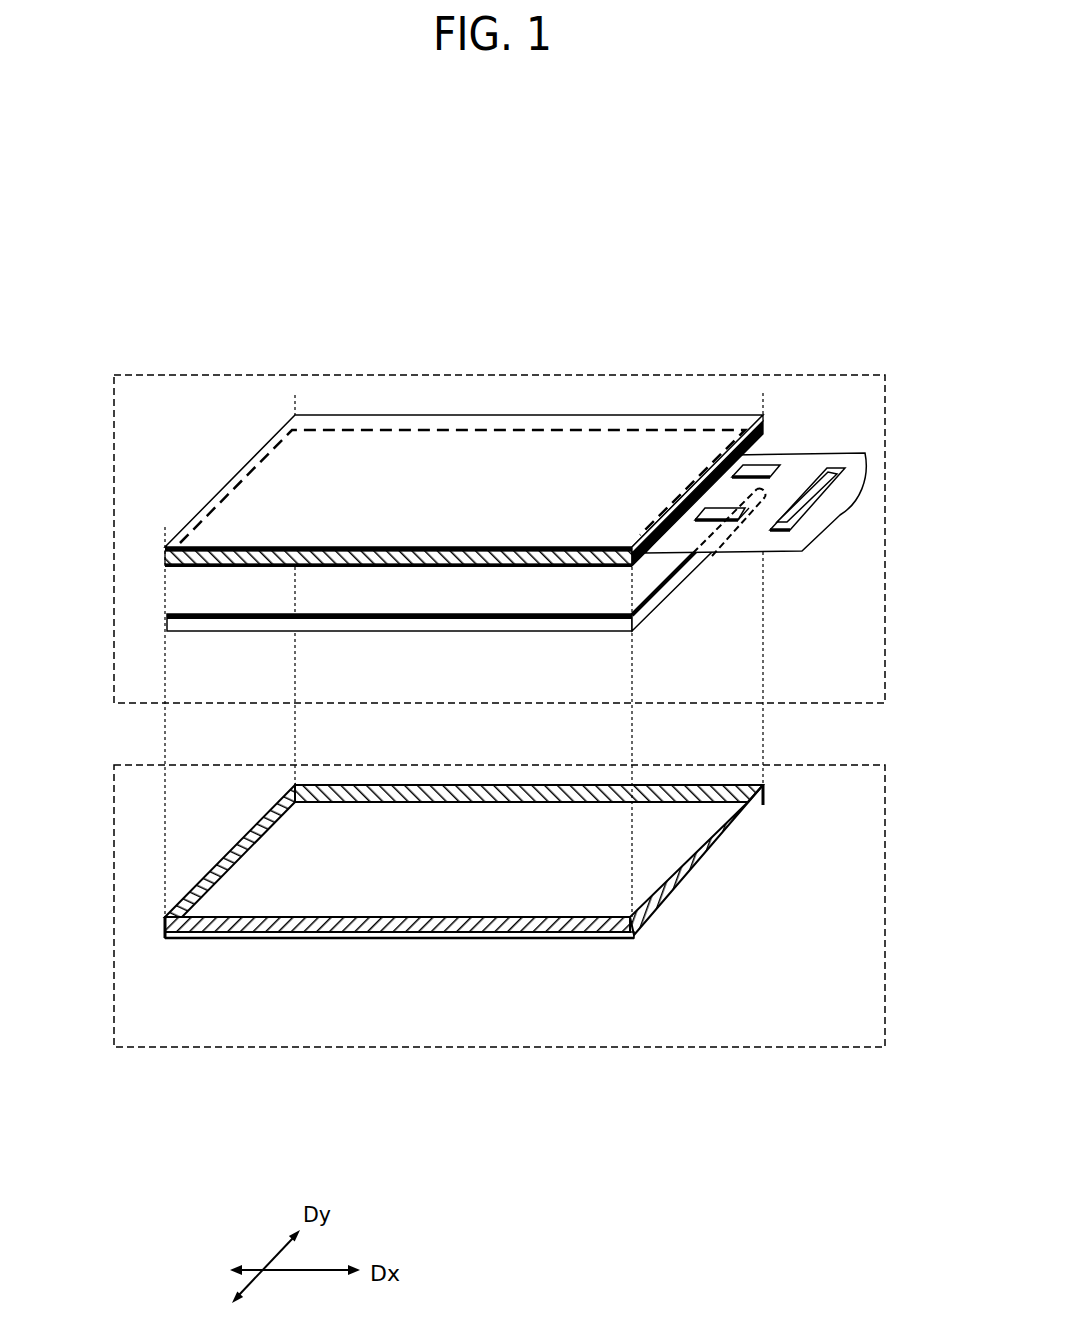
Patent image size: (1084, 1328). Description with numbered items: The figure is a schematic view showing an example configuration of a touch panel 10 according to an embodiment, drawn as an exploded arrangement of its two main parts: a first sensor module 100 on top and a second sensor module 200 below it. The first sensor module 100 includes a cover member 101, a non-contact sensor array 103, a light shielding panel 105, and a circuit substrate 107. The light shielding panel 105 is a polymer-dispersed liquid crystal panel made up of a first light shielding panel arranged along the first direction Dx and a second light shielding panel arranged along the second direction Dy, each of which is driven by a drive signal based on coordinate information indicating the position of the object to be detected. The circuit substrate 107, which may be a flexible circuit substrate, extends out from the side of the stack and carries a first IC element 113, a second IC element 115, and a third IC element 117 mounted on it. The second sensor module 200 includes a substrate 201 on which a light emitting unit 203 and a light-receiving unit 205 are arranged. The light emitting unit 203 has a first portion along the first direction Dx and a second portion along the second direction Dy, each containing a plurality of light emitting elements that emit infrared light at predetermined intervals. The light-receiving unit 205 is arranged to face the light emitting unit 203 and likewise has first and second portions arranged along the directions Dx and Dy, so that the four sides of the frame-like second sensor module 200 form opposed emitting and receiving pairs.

The touch panel 10 is at (755, 218).
The first sensor module 100 is at (400, 376).
The cover member 101 is at (545, 413).
The non-contact sensor array 103 is at (412, 567).
The light shielding panel 105 is at (412, 632).
The circuit substrate 107 is at (808, 452).
The first IC element 113 is at (757, 465).
The second IC element 115 is at (713, 523).
The third IC element 117 is at (820, 510).
The second sensor module 200 is at (455, 1047).
The substrate 201 is at (475, 869).
The light emitting unit 203 is at (447, 784).
The light-receiving unit 205 is at (210, 866).